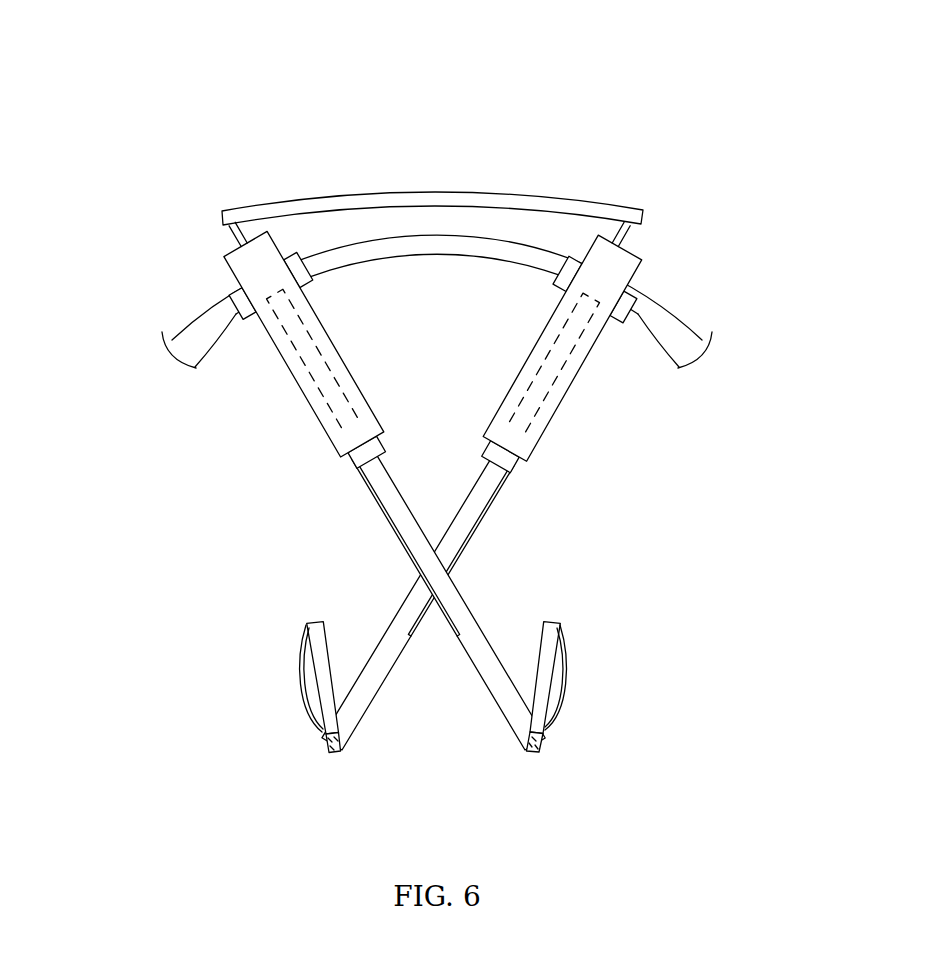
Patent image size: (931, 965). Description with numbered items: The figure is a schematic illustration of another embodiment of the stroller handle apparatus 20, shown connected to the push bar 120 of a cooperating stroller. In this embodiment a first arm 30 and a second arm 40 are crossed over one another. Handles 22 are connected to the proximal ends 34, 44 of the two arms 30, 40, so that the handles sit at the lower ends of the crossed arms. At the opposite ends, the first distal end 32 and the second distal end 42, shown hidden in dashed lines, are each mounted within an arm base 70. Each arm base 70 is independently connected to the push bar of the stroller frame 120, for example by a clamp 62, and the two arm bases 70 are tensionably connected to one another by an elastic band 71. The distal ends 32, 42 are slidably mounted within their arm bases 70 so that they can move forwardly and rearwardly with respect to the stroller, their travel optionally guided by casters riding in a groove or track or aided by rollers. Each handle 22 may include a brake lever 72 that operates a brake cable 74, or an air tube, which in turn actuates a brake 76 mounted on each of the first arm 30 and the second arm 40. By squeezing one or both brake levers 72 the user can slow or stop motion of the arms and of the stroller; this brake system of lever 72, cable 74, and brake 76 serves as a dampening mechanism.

The handle apparatus 20 is at (186, 78).
The handle 22 is at (558, 622).
The first arm 30 is at (242, 490).
The first distal end 32 is at (213, 271).
The proximal end 34 is at (566, 754).
The second arm 40 is at (665, 503).
The second distal end 42 is at (657, 280).
The proximal end 44 is at (357, 759).
The clamp 62 is at (248, 318).
The arm base 70 is at (572, 381).
The elastic band 71 is at (530, 157).
The brake lever 72 is at (305, 707).
The brake cable 74 is at (390, 515).
The brake 76 is at (382, 447).
The push bar 120 is at (470, 257).